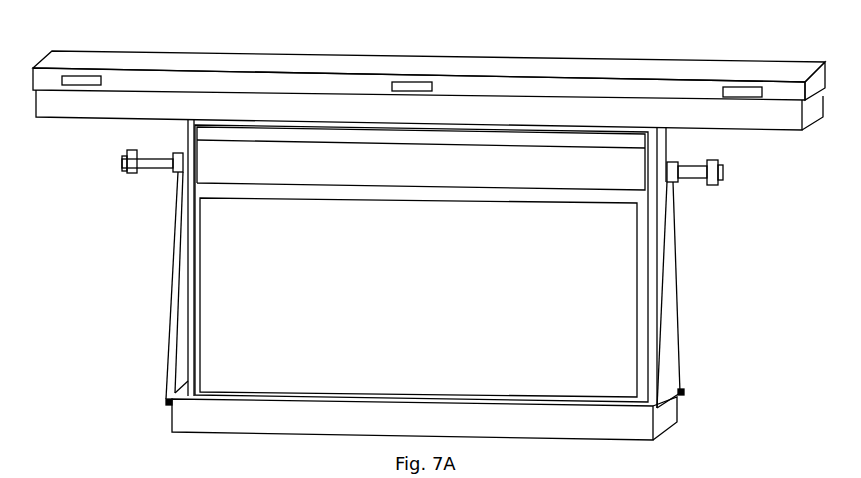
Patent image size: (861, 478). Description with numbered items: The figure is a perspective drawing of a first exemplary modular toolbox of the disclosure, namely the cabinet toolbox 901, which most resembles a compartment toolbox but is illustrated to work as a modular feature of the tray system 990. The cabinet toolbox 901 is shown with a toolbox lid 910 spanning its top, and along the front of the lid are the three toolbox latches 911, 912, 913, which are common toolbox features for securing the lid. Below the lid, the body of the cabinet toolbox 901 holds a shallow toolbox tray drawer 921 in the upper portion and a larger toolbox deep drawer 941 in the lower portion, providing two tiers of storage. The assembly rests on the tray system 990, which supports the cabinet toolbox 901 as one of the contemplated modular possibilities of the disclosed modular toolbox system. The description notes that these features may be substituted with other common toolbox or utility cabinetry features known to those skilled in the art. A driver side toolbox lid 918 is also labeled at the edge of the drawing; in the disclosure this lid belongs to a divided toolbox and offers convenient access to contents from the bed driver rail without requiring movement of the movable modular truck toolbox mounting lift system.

The cabinet toolbox 901 is at (238, 34).
The toolbox lid 910 is at (508, 64).
The toolbox latch 911 is at (88, 81).
The toolbox latch 912 is at (402, 88).
The toolbox latch 913 is at (740, 90).
The toolbox tray drawer 921 is at (448, 176).
The toolbox deep drawer 941 is at (448, 300).
The tray system 990 is at (638, 423).
The driver side toolbox lid 918 is at (100, 477).